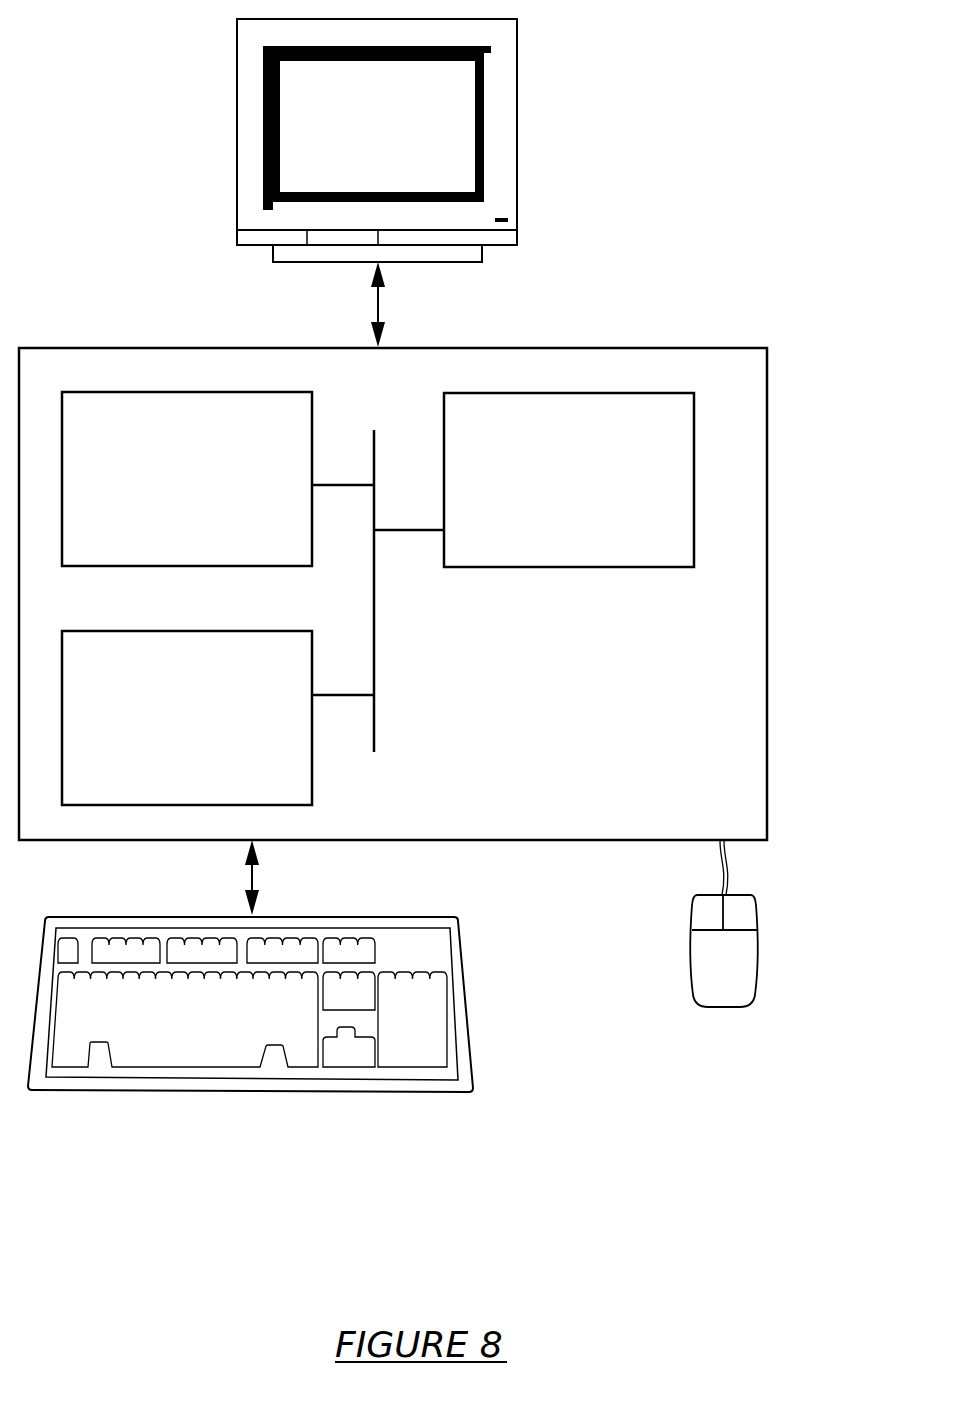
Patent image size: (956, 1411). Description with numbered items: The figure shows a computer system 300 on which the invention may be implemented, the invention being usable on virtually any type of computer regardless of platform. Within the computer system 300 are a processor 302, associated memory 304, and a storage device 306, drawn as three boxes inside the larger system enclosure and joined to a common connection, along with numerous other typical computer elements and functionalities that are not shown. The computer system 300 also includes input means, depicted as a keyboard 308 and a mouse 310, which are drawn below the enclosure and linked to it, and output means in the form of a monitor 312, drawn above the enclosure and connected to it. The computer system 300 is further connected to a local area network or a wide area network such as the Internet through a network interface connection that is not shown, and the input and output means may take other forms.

The computer system 300 is at (790, 188).
The processor 302 is at (564, 493).
The memory 304 is at (165, 491).
The storage device 306 is at (160, 731).
The keyboard 308 is at (154, 1045).
The mouse 310 is at (702, 976).
The monitor 312 is at (354, 145).